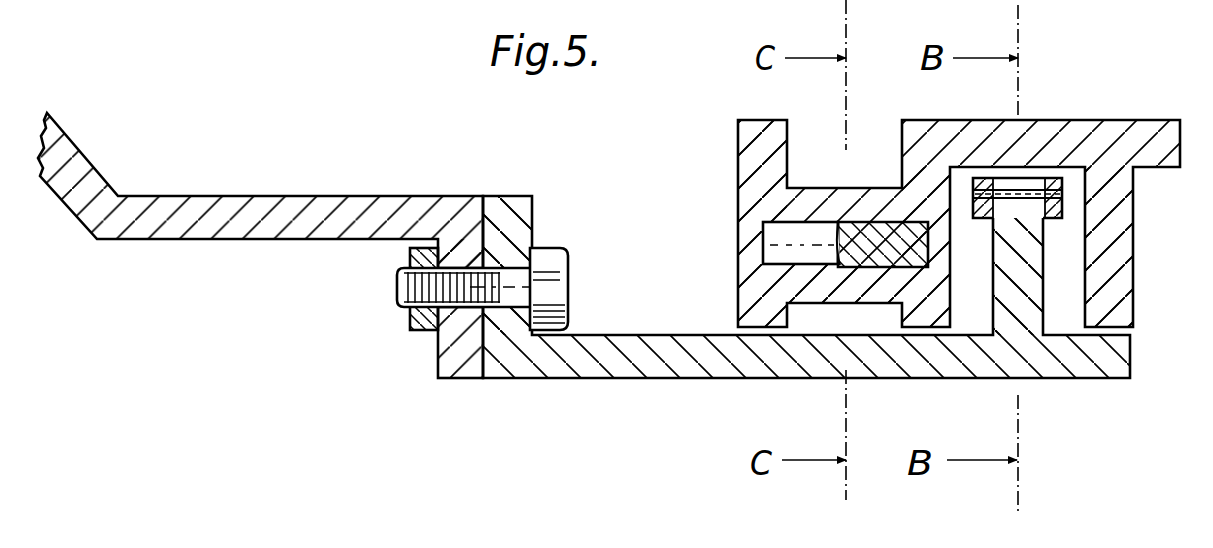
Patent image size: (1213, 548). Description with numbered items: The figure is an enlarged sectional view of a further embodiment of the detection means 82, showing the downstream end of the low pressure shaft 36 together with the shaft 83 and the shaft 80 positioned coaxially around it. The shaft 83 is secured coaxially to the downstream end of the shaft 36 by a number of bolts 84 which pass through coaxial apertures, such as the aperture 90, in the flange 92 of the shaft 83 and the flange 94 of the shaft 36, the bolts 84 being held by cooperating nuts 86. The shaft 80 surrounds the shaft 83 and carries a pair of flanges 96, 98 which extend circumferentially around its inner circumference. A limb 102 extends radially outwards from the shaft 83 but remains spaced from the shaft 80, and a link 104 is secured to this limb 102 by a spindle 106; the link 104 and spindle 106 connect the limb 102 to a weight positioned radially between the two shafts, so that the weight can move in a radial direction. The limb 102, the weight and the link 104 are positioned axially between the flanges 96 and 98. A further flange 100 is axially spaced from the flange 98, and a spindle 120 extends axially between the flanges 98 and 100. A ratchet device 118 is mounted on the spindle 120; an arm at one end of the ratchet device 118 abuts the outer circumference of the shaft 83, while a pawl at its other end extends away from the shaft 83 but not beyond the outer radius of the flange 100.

The shaft 36 is at (318, 196).
The shaft 80 is at (1113, 137).
The detection means 82 is at (712, 435).
The shaft 83 is at (596, 368).
The bolts 84 is at (567, 252).
The nuts 86 is at (418, 318).
The aperture 90 is at (455, 245).
The flange 92 is at (532, 196).
The flange 94 is at (462, 358).
The flange 96 is at (1112, 235).
The flange 98 is at (940, 310).
The flange 100 is at (757, 147).
The limb 102 is at (1032, 310).
The link 104 is at (1052, 183).
The spindle 106 is at (1000, 193).
The ratchet device 118 is at (838, 288).
The spindle 120 is at (776, 245).